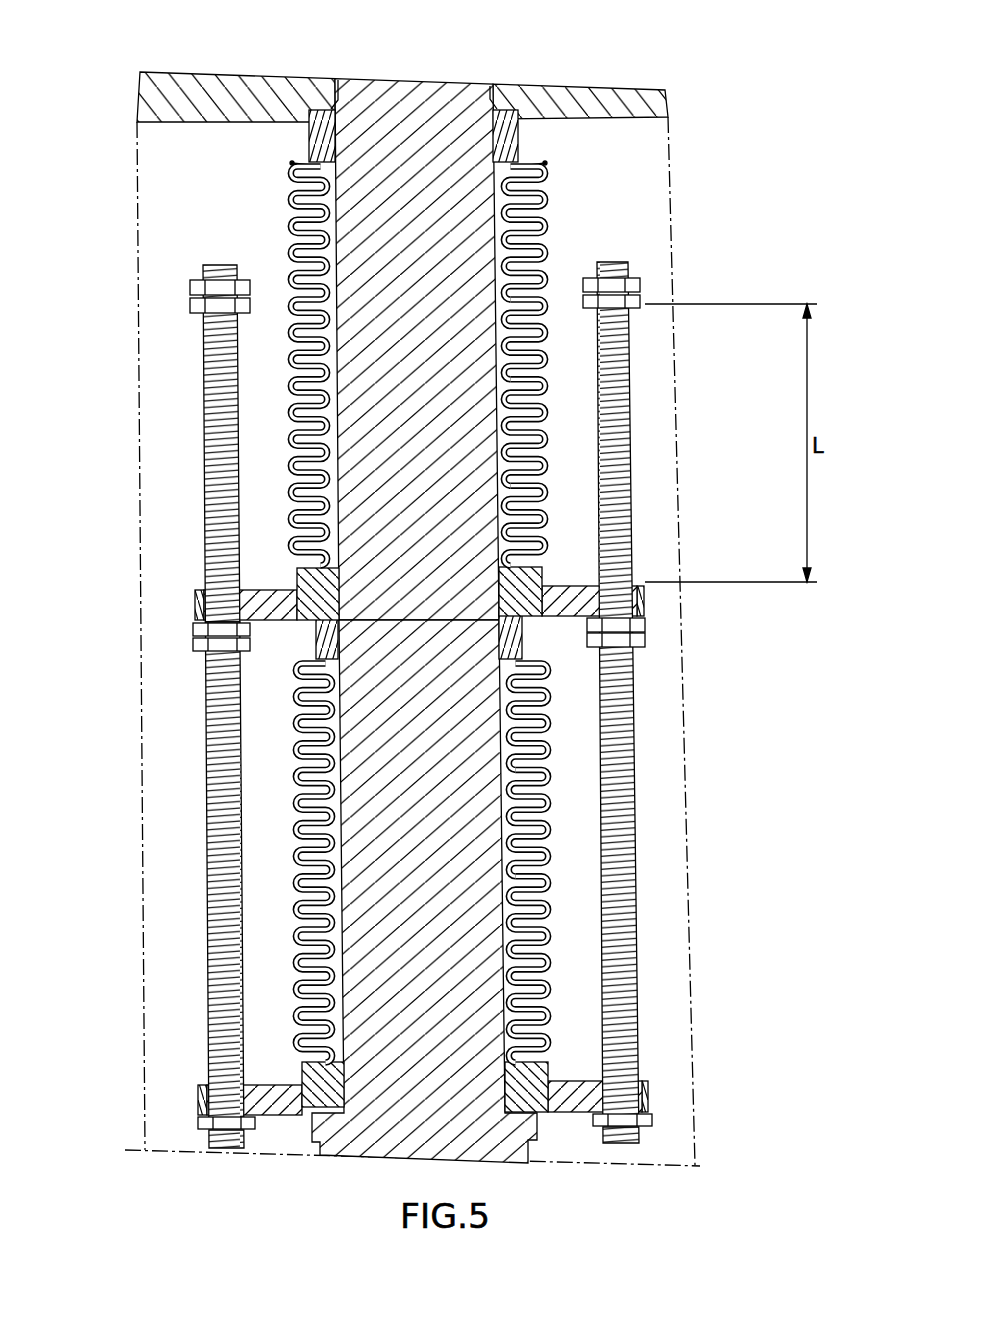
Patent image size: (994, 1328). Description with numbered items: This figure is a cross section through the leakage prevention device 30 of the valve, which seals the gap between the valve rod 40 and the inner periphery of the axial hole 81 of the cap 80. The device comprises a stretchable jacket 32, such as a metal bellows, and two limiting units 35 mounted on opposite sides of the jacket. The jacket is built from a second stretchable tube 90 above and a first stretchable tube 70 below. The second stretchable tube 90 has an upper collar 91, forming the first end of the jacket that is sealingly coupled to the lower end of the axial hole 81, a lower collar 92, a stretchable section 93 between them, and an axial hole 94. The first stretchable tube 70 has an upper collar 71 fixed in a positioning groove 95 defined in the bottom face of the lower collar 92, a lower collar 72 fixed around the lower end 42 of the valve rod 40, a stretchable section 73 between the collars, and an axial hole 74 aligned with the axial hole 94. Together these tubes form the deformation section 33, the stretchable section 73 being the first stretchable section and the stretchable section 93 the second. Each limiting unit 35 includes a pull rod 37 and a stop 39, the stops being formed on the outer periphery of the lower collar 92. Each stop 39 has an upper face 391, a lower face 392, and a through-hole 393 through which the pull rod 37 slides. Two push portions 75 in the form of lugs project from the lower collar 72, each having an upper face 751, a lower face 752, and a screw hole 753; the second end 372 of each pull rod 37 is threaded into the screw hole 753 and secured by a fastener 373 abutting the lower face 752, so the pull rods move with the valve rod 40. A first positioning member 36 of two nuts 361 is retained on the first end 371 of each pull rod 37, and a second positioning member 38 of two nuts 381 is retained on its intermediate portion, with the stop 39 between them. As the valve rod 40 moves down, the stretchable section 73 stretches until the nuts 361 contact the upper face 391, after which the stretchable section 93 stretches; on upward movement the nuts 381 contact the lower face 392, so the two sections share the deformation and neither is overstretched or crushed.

The leakage prevention device 30 is at (575, 184).
The stretchable jacket 32 is at (648, 364).
The deformation section 33 is at (294, 710).
The limiting unit 35 is at (207, 790).
The first positioning member 36 is at (405, 300).
The nut 361 is at (190, 287).
The pull rod 37 is at (215, 468).
The first end 371 is at (220, 266).
The second end 372 is at (226, 1148).
The fastener 373 is at (222, 1133).
The second positioning member 38 is at (408, 661).
The nut 381 is at (193, 628).
The stop 39 is at (415, 635).
The upper face 391 is at (527, 575).
The lower face 392 is at (521, 646).
The through-hole 393 is at (195, 606).
The valve rod 40 is at (473, 428).
The lower end 42 is at (475, 975).
The first stretchable tube 70 is at (442, 863).
The upper collar 71 is at (570, 620).
The lower collar 72 is at (548, 1065).
The stretchable section 73 is at (550, 818).
The axial hole 74 is at (548, 762).
The push portion 75 is at (437, 1111).
The upper face 751 is at (486, 1124).
The lower face 752 is at (573, 1113).
The screw hole 753 is at (205, 1100).
The cap 80 is at (217, 88).
The axial hole 81 is at (333, 98).
The second stretchable tube 90 is at (290, 370).
The upper collar 91 is at (500, 105).
The lower collar 92 is at (545, 562).
The stretchable section 93 is at (548, 362).
The axial hole 94 is at (500, 397).
The positioning groove 95 is at (545, 585).